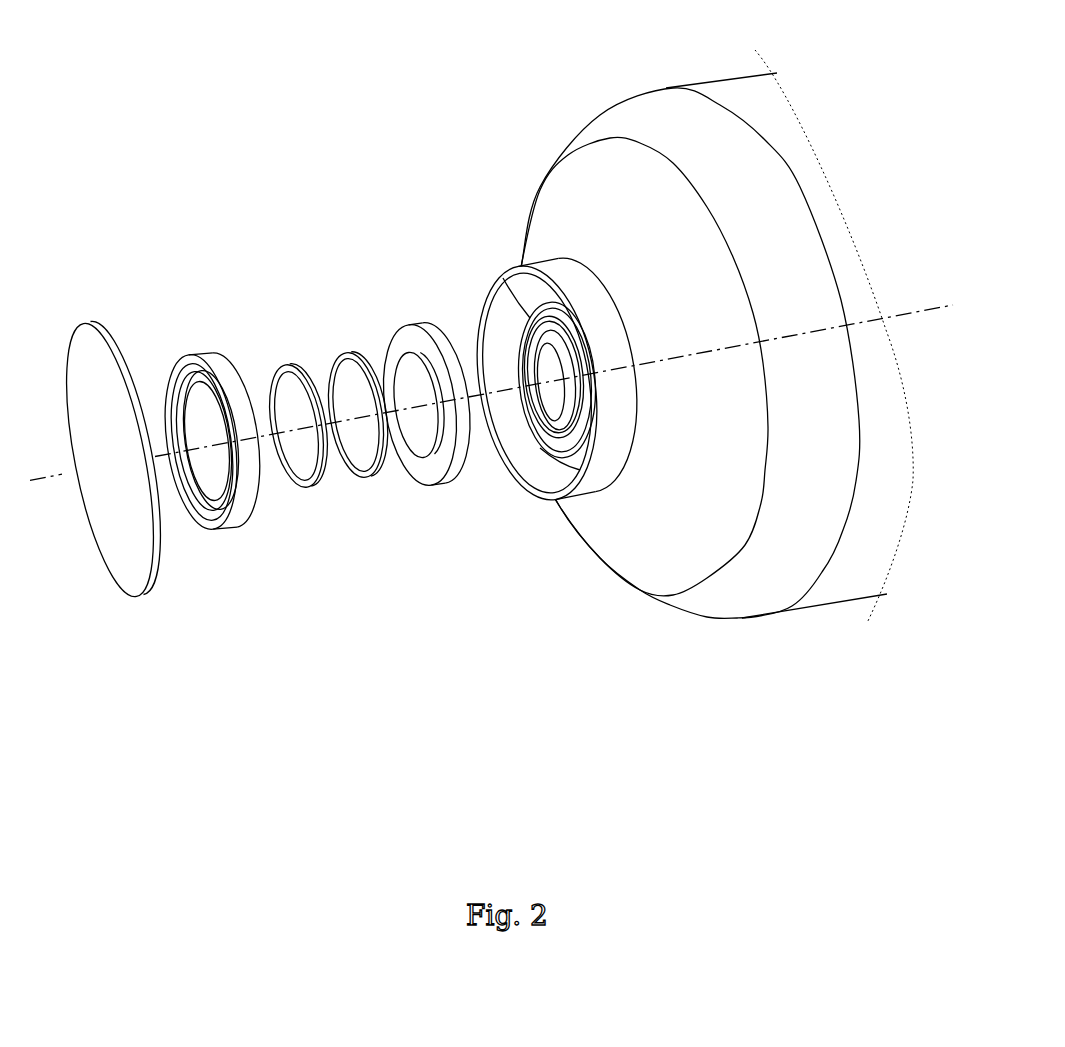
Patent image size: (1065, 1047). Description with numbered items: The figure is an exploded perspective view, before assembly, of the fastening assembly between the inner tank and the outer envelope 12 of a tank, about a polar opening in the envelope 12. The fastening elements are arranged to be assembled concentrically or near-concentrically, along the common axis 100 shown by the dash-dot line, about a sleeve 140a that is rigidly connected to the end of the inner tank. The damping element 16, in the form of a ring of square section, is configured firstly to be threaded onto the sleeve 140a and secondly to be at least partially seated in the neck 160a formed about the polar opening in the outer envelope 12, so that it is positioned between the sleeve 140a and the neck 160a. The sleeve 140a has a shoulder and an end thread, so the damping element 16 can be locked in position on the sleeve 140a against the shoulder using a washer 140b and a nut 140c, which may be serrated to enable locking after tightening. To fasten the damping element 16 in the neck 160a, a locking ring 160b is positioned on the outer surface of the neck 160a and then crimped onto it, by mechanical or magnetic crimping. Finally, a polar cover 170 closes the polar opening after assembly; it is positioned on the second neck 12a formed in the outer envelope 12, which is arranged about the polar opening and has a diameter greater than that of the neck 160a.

The outer envelope 12 is at (670, 130).
The second neck 12a is at (603, 483).
The damping element 16 is at (427, 330).
The optical axis 100 is at (930, 307).
The sleeve 140a is at (540, 448).
The washer 140b is at (352, 477).
The nut 140c is at (293, 367).
The neck 160a is at (517, 265).
The locking ring 160b is at (241, 516).
The polar cover 170 is at (100, 330).